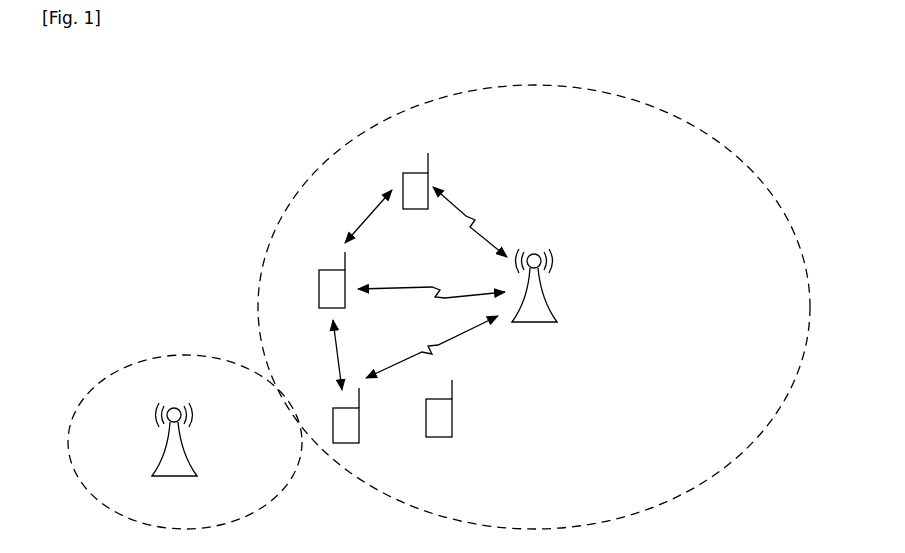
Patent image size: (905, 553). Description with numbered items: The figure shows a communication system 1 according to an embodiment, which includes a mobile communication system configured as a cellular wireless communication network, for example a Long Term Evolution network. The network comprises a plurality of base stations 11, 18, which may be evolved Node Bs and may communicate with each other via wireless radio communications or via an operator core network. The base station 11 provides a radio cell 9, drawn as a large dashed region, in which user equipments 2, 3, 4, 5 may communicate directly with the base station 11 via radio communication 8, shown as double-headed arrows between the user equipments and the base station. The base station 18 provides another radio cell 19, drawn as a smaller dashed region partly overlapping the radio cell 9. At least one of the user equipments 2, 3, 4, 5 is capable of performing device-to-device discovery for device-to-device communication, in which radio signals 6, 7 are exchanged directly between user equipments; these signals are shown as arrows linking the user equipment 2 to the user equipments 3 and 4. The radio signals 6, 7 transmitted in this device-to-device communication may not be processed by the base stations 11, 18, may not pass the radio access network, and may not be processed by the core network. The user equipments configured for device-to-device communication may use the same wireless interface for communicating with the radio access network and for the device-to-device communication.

The communication system 1 is at (93, 165).
The user equipment 2 is at (320, 308).
The user equipment 3 is at (334, 443).
The user equipment 4 is at (404, 210).
The user equipment 5 is at (426, 437).
The radio signal 6 is at (336, 354).
The radio signal 7 is at (362, 221).
The radio communication 8 is at (473, 214).
The radio cell 9 is at (763, 182).
The base station 11 is at (557, 322).
The base station 18 is at (197, 476).
The radio cell 19 is at (140, 361).